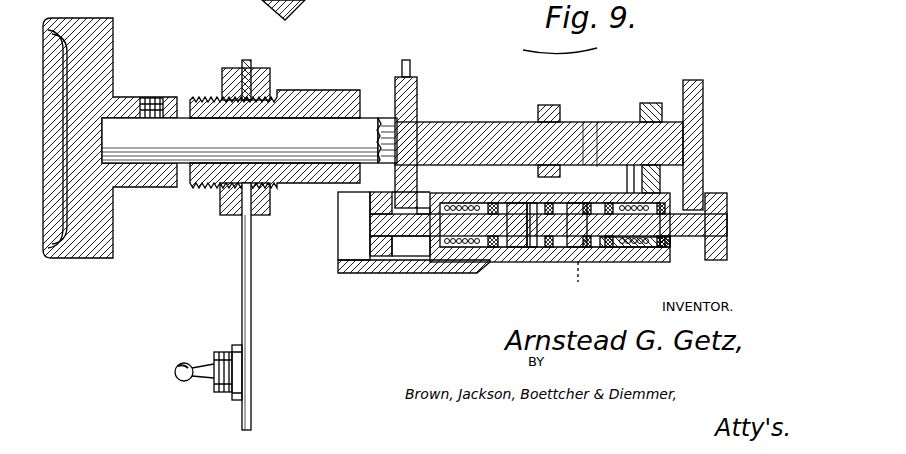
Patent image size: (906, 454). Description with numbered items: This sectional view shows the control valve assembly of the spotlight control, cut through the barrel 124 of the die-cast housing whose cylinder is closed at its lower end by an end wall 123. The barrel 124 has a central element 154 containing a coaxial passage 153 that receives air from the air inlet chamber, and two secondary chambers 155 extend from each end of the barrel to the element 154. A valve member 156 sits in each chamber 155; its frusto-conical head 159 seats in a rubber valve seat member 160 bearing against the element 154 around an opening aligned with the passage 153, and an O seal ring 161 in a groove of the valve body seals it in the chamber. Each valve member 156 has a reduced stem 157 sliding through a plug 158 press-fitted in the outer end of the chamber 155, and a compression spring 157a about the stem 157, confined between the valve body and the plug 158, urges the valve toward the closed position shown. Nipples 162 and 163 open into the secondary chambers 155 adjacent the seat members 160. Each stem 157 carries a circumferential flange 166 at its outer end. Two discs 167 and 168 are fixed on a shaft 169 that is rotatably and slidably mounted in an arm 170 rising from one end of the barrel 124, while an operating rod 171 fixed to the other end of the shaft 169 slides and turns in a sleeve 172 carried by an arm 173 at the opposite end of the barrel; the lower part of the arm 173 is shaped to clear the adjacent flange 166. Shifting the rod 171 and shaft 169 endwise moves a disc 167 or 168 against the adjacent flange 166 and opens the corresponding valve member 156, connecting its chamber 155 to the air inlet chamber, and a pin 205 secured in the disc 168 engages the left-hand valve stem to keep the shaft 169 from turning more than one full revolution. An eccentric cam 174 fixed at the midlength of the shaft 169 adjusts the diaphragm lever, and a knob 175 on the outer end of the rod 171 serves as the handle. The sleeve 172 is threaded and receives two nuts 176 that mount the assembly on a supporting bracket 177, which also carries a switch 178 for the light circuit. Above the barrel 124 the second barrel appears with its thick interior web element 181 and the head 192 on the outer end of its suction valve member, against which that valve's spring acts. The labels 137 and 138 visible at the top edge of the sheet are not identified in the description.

The end wall 123 is at (226, 18).
The valve element 137 is at (315, 10).
The valve element 138 is at (399, 7).
The barrel 124 is at (542, 308).
The passage 153 is at (517, 191).
The central element 154 is at (527, 115).
The secondary chambers 155 is at (651, 306).
The valve member 156 is at (471, 308).
The stem 157 is at (761, 180).
The compression spring 157a is at (692, 286).
The plug 158 is at (779, 286).
The frusto-conical head 159 is at (580, 193).
The valve seat member 160 is at (574, 286).
The O seal ring 161 is at (630, 110).
The nipple 162 is at (597, 306).
The nipple 163 is at (511, 286).
The circumferential flange 166 is at (369, 308).
The disc 167 is at (766, 80).
The disc 168 is at (471, 78).
The shaft 169 is at (605, 80).
The arm 170 is at (666, 80).
The operating rod 171 is at (170, 227).
The sleeve 172 is at (314, 243).
The arm 173 is at (320, 243).
The eccentric cam 174 is at (539, 90).
The knob 175 is at (112, 306).
The nuts 176 is at (266, 52).
The supporting bracket 177 is at (226, 285).
The switch 178 is at (192, 341).
The web element 181 is at (488, 114).
The head 192 is at (422, 306).
The pin 205 is at (450, 48).